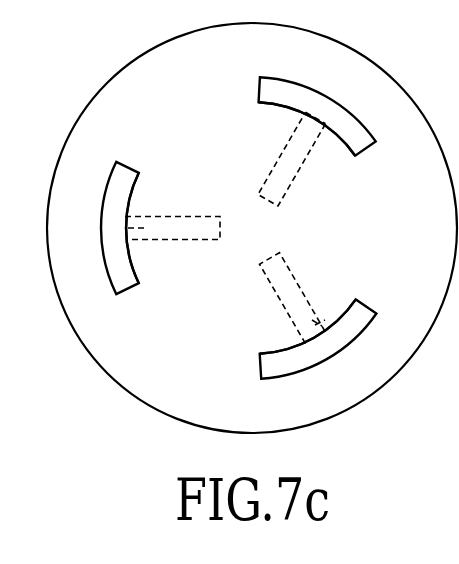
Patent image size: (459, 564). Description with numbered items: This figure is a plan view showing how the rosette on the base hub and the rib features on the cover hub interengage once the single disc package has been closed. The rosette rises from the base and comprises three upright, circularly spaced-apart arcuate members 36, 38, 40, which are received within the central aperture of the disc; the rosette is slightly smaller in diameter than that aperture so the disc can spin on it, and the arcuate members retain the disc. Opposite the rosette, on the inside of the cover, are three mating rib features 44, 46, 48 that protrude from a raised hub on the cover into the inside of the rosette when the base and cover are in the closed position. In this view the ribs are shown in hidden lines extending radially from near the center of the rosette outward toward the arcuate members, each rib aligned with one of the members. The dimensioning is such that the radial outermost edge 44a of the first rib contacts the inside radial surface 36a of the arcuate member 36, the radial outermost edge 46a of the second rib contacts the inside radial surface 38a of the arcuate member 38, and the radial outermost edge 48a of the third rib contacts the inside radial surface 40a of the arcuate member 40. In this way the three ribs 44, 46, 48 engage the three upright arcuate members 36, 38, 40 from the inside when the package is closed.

The upright arcuate member 36 is at (118, 213).
The inside radial surface 36a is at (128, 213).
The upright arcuate member 38 is at (332, 118).
The inside radial surface 38a is at (340, 145).
The upright arcuate member 40 is at (302, 357).
The inside radial surface 40a is at (283, 353).
The rib feature 44 is at (200, 241).
The radial outermost edge 44a is at (148, 228).
The rib feature 46 is at (266, 176).
The radial outermost edge 46a is at (308, 117).
The rib feature 48 is at (289, 270).
The radial outermost edge 48a is at (312, 320).